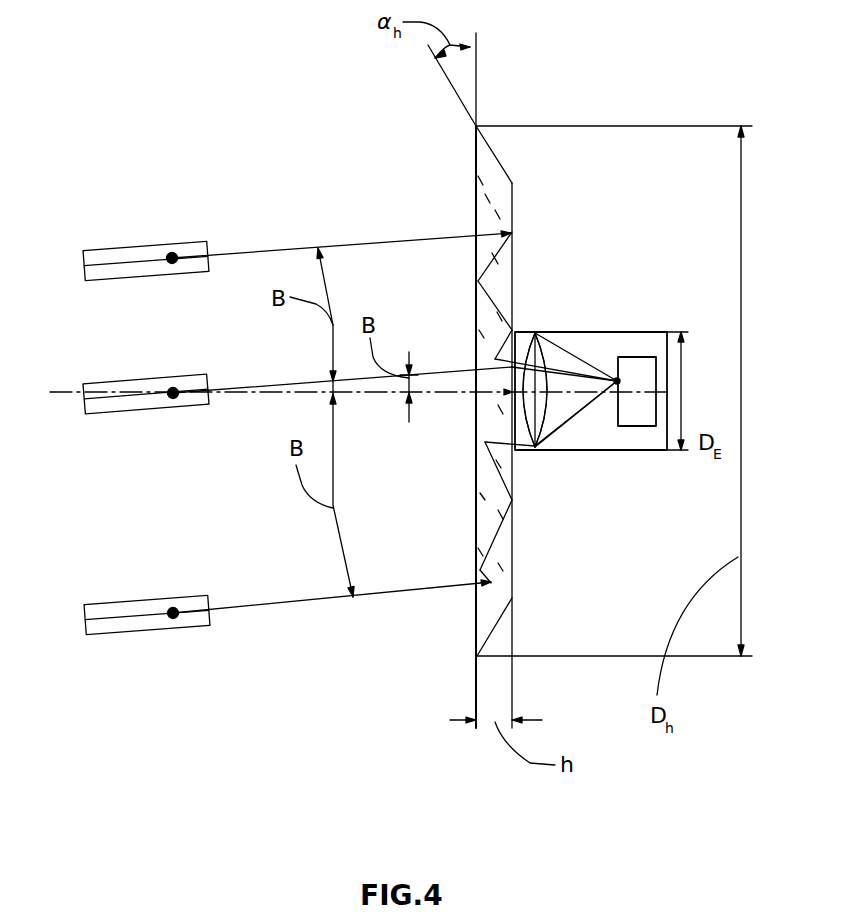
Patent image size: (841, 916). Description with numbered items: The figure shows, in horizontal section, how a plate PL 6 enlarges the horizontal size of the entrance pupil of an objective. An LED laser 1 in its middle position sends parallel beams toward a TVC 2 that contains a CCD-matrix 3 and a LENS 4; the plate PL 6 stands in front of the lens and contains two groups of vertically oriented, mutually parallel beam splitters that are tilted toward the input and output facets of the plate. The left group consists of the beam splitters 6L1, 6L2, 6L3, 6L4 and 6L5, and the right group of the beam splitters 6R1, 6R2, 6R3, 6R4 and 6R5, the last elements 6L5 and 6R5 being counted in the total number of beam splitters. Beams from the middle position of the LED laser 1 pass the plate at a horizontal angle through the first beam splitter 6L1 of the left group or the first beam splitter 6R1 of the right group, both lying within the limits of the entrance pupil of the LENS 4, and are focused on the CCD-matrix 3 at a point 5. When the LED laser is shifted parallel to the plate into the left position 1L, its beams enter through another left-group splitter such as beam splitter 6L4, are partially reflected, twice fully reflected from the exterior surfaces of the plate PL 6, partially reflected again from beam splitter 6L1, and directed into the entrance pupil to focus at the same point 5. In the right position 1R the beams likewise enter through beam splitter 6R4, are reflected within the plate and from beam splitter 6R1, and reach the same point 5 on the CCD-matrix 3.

The LED laser 1 is at (165, 408).
The left position of LED laser 1L is at (163, 275).
The right position of LED laser 1R is at (167, 628).
The TVC 2 is at (535, 450).
The CCD-matrix 3 is at (617, 381).
The LENS 4 is at (548, 335).
The point 5 is at (617, 381).
The plate PL 6 is at (518, 255).
The first beam splitter of the left group 6L1 is at (478, 352).
The beam splitter of the left group 6L2 is at (478, 305).
The beam splitter of the left group 6L3 is at (477, 248).
The beam splitter of the left group 6L4 is at (477, 200).
The last beam splitter of the left group 6L5 is at (477, 153).
The first beam splitter of the right group 6R1 is at (488, 445).
The beam splitter of the right group 6R2 is at (490, 480).
The beam splitter of the right group 6R3 is at (488, 532).
The beam splitter of the right group 6R4 is at (482, 588).
The last beam splitter of the right group 6R5 is at (490, 628).